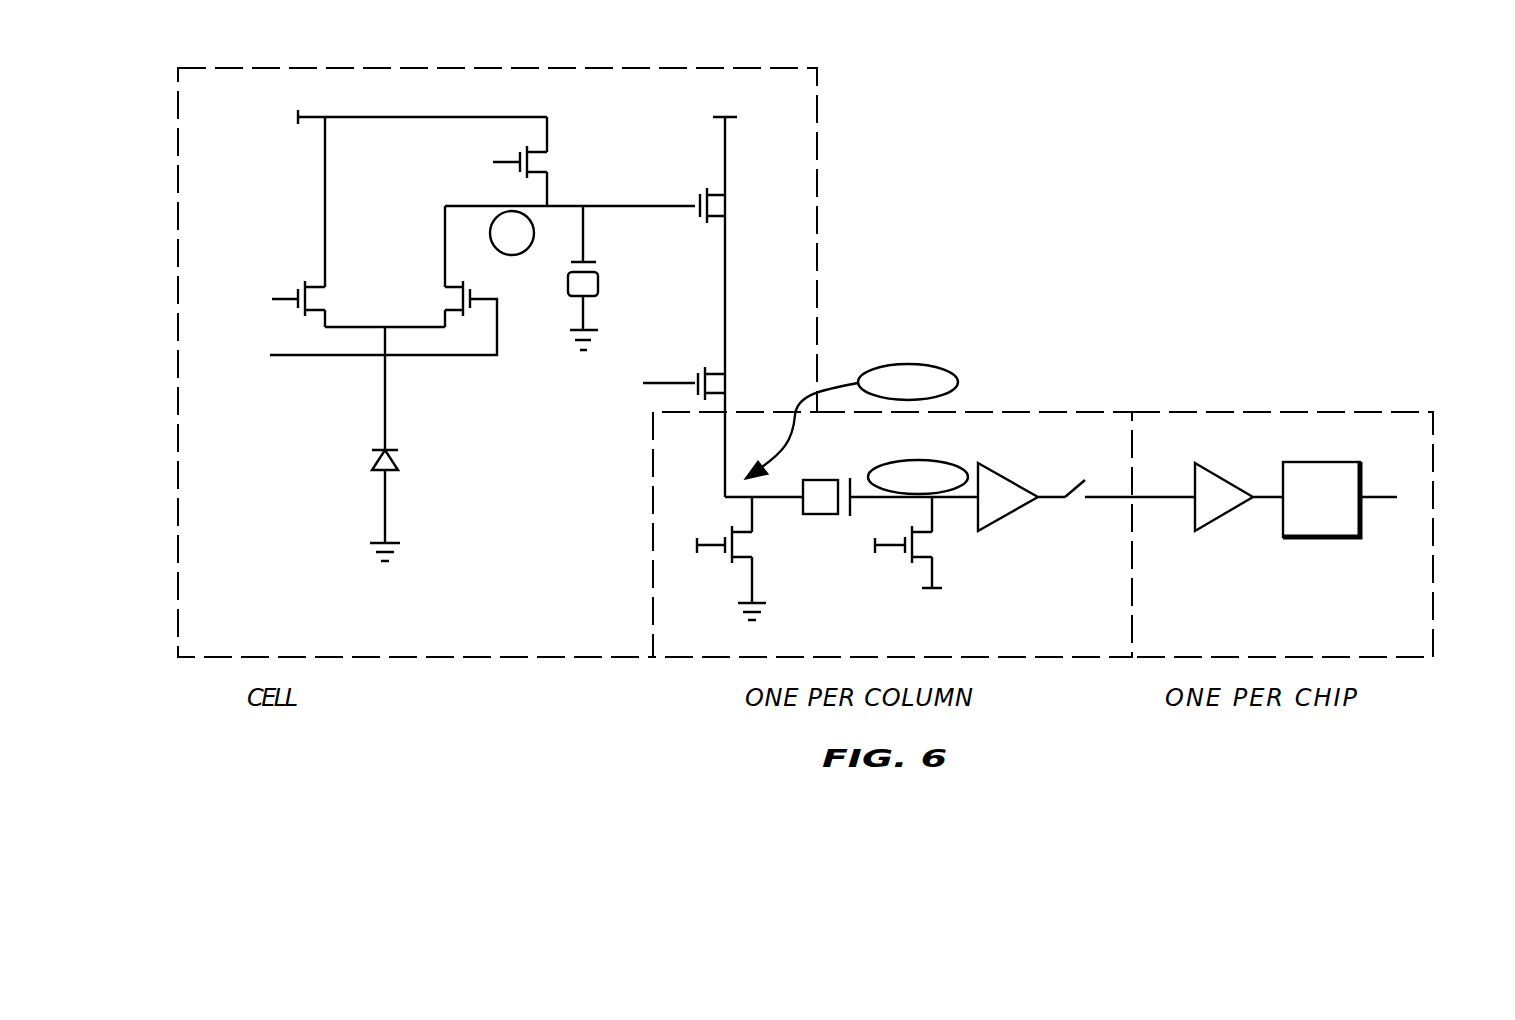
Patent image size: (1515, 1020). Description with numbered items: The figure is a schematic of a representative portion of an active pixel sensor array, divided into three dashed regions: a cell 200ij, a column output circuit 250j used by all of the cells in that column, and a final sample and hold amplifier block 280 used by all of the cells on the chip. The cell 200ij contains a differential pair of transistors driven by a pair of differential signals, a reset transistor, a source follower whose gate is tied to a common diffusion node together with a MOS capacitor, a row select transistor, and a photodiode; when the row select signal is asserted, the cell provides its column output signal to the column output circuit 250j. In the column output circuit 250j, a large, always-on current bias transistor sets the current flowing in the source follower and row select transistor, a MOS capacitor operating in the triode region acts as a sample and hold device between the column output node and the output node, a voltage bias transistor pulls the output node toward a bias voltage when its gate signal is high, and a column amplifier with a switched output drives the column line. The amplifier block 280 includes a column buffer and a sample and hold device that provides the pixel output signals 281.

The cell 200ij is at (496, 68).
The column output circuit 250j is at (1000, 412).
The final sample and hold amplifier block 280 is at (1298, 412).
The pixel output signals 281 is at (1392, 497).